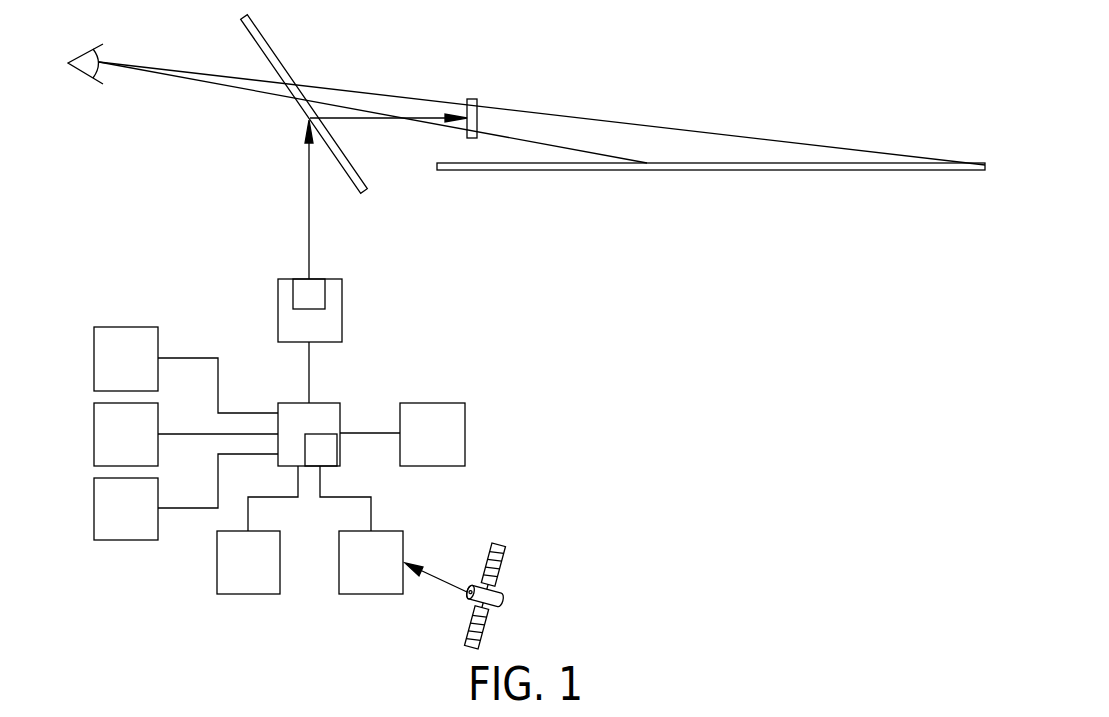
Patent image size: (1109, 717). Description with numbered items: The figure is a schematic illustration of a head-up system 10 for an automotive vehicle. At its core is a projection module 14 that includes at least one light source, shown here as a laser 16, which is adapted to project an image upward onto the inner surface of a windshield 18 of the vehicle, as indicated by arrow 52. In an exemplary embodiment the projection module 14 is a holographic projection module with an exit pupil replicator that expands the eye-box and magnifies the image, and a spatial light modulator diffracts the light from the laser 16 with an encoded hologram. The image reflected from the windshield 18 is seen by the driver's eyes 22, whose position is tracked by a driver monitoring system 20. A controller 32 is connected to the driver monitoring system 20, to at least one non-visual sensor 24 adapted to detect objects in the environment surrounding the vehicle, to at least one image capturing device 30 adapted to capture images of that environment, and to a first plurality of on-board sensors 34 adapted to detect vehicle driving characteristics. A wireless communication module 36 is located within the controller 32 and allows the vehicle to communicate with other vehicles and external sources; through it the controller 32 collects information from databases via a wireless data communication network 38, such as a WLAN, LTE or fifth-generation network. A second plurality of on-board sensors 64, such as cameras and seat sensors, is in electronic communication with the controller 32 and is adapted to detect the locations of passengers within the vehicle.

The head-up system 10 is at (641, 364).
The projection module 14 is at (296, 336).
The laser 16 is at (296, 305).
The windshield 18 is at (280, 60).
The driver monitoring system 20 is at (113, 369).
The driver's eyes 22 is at (85, 73).
The non-visual sensor 24 is at (419, 444).
The image capturing device 30 is at (113, 444).
The controller 32 is at (296, 428).
The first plurality of on-board sensors 34 is at (113, 519).
The wireless communication module 36 is at (308, 460).
The wireless data communication network 38 is at (765, 170).
The arrow 52 is at (309, 234).
The second plurality of on-board sensors 64 is at (235, 572).